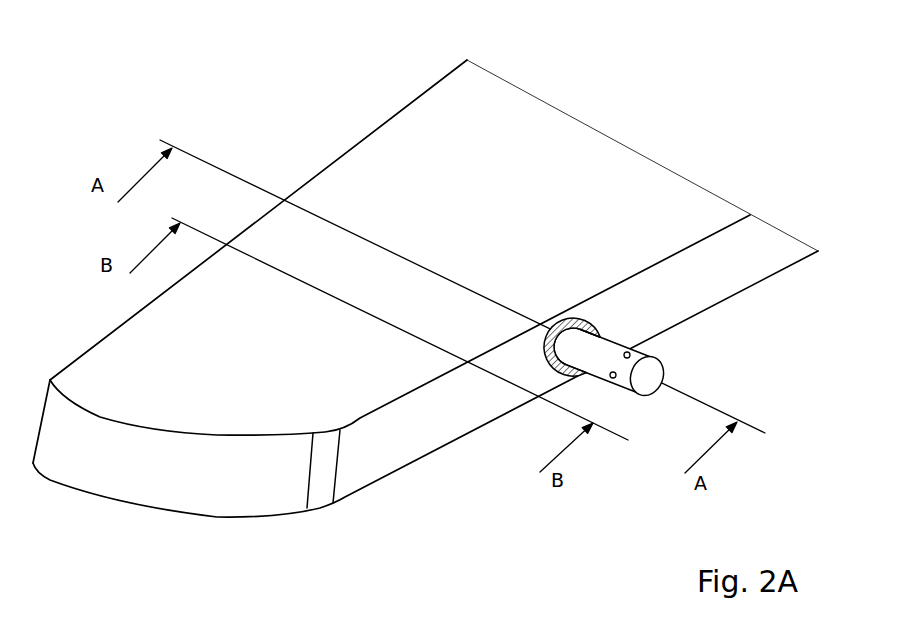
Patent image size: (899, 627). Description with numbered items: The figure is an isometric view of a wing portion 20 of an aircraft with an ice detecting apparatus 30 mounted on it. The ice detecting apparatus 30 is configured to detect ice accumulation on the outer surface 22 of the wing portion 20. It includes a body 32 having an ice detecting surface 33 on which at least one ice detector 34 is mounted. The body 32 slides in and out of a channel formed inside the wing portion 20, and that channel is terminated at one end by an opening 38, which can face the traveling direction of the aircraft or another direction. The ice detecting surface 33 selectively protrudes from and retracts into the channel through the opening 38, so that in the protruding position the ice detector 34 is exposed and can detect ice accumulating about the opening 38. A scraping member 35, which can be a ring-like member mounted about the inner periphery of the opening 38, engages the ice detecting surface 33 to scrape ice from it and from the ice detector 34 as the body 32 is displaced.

The wing portion 20 is at (331, 97).
The outer surface 22 is at (737, 250).
The ice detecting apparatus 30 is at (633, 346).
The body 32 is at (655, 372).
The ice detecting surface 33 is at (610, 343).
The ice detector 34 is at (614, 382).
The scraping member 35 is at (586, 320).
The opening 38 is at (542, 323).